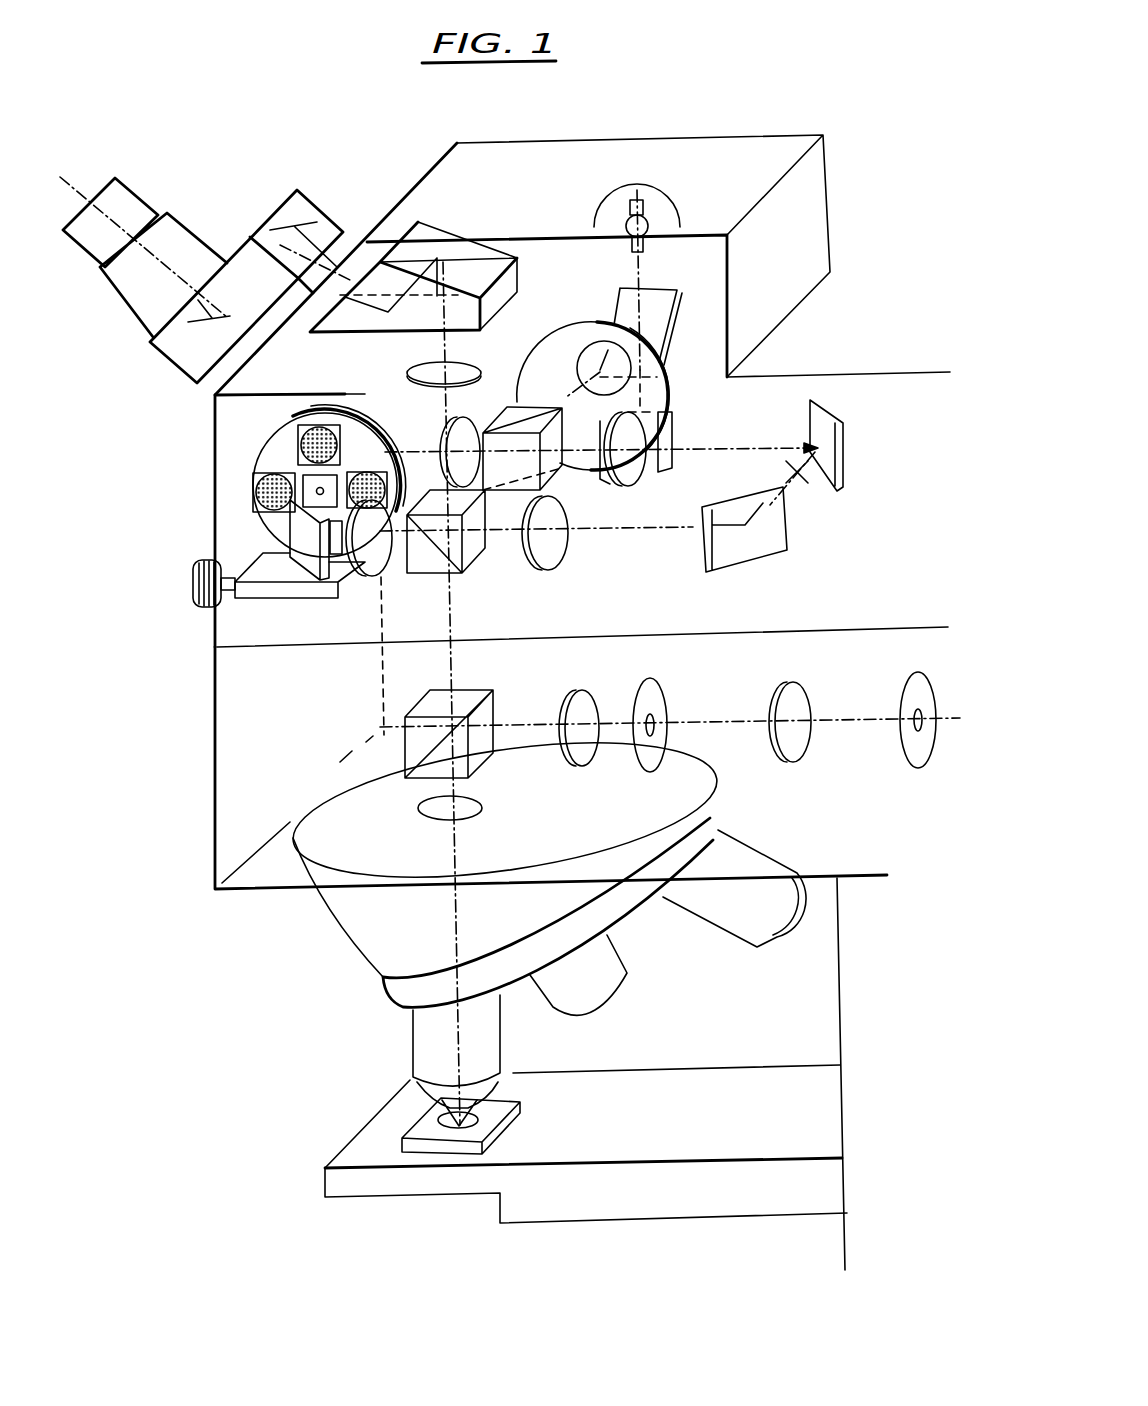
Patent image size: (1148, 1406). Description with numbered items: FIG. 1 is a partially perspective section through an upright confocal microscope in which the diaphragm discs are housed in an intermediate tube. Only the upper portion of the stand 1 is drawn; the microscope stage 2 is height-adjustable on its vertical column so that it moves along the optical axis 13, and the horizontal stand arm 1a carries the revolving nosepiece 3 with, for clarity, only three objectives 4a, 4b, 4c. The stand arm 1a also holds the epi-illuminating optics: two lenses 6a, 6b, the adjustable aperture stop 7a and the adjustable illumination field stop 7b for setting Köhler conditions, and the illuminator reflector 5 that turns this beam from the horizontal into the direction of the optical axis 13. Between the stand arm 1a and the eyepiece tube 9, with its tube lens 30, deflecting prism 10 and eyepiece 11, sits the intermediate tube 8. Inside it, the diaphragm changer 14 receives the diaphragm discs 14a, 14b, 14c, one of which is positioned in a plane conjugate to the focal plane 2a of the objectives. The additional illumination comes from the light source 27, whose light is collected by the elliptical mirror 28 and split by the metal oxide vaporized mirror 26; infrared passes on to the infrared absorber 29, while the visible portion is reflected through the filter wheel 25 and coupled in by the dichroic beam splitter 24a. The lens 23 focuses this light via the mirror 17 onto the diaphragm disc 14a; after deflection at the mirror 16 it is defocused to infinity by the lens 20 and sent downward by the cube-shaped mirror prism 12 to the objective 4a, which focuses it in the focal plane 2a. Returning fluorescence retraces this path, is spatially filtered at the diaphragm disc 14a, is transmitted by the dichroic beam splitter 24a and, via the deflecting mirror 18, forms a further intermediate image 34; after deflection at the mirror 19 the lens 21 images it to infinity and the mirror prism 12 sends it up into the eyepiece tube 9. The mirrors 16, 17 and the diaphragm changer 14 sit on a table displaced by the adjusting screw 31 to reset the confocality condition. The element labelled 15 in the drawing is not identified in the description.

The stand 1 is at (842, 1034).
The stand arm 1a is at (228, 792).
The microscope stage 2 is at (687, 1072).
The focal plane 2a is at (438, 1120).
The revolving nosepiece 3 is at (347, 938).
The objective 4a is at (432, 1035).
The objective 4b is at (593, 987).
The objective 4c is at (760, 928).
The illuminator reflector 5 is at (488, 707).
The lens 6a is at (587, 706).
The lens 6b is at (797, 702).
The adjustable aperture stop 7a is at (657, 697).
The adjustable illumination field stop 7b is at (899, 692).
The intermediate tube 8 is at (215, 435).
The eyepiece tube 9 is at (483, 158).
The deflecting prism 10 is at (418, 222).
The eyepiece 11 is at (136, 210).
The mirror prism 12 is at (473, 555).
The optical axis 13 is at (447, 618).
The diaphragm changer 14 is at (268, 425).
The diaphragm disc 14a is at (394, 566).
The diaphragm disc 14b is at (213, 401).
The diaphragm disc 14c is at (260, 478).
The illumination beam path 15 is at (648, 530).
The mirror 16 is at (318, 560).
The mirror 17 is at (343, 393).
The deflecting mirror 18 is at (843, 423).
The mirror 19 is at (743, 550).
The lens 20 is at (368, 563).
The lens 21 is at (552, 557).
The lens 23 is at (447, 427).
The dichroic beam splitter 24a is at (557, 480).
The filter wheel 25 is at (662, 394).
The metal oxide vaporized mirror 26 is at (660, 318).
The light source 27 is at (645, 224).
The elliptical mirror 28 is at (637, 188).
The infrared absorber 29 is at (675, 458).
The tube lens 30 is at (418, 375).
The adjusting screw 31 is at (194, 607).
The intermediate image 34 is at (799, 474).